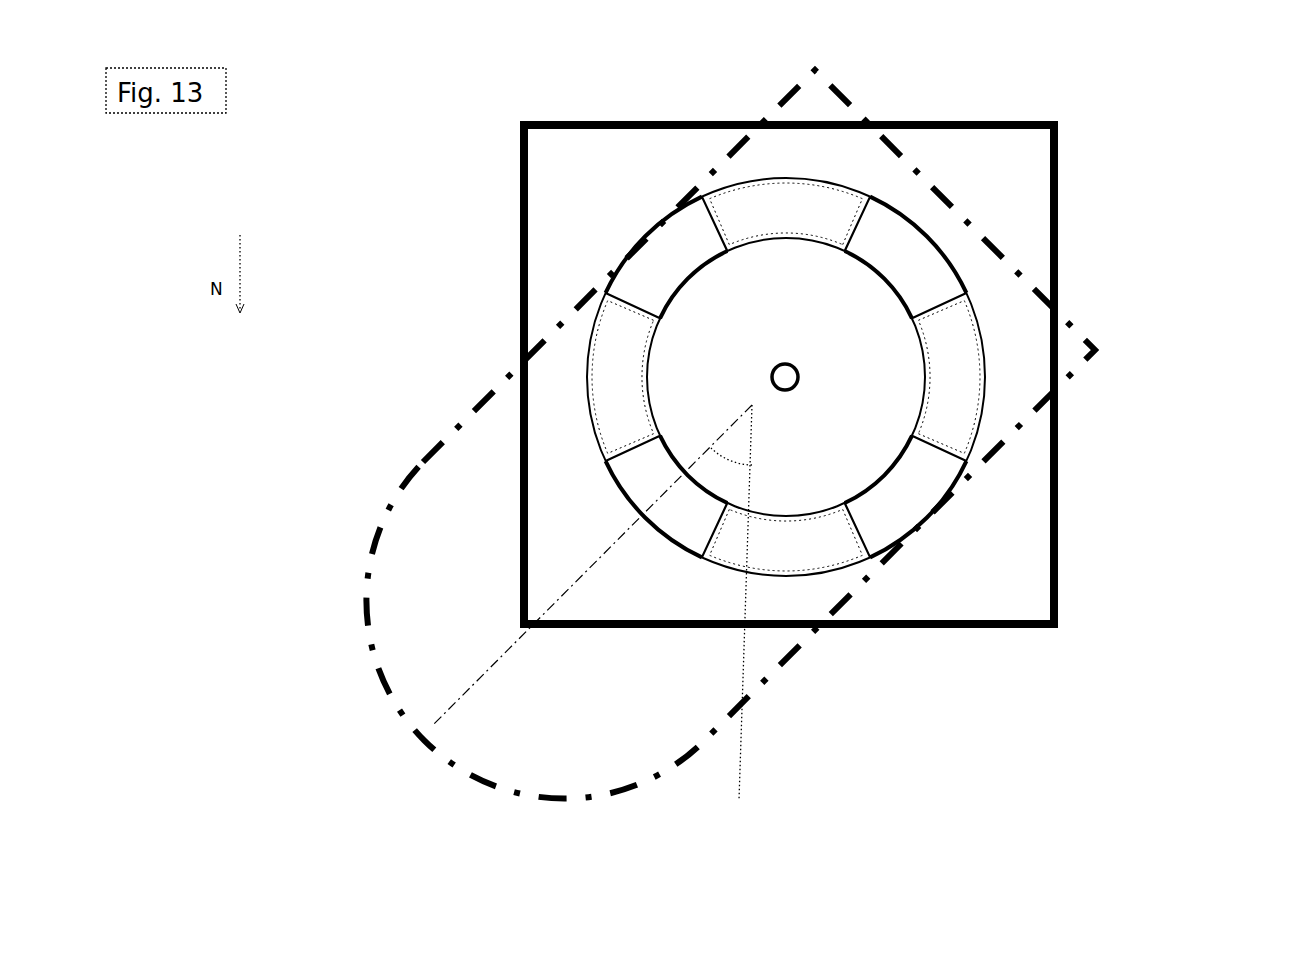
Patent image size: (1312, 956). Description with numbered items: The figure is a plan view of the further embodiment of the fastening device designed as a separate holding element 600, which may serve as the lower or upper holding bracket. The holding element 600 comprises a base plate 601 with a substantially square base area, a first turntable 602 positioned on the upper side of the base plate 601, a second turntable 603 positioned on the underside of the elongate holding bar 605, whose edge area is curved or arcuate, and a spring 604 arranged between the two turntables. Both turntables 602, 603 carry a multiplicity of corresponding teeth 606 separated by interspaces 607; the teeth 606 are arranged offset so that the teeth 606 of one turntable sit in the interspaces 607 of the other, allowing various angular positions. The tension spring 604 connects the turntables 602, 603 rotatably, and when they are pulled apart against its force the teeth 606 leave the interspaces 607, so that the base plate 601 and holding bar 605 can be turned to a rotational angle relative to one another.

The holding element 600 is at (791, 435).
The base plate 601 is at (1025, 577).
The first turntable 602 is at (965, 387).
The second turntable 603 is at (610, 348).
The spring 604 is at (800, 372).
The holding bar 605 is at (380, 582).
The teeth 606 is at (812, 560).
The interspaces 607 is at (915, 487).